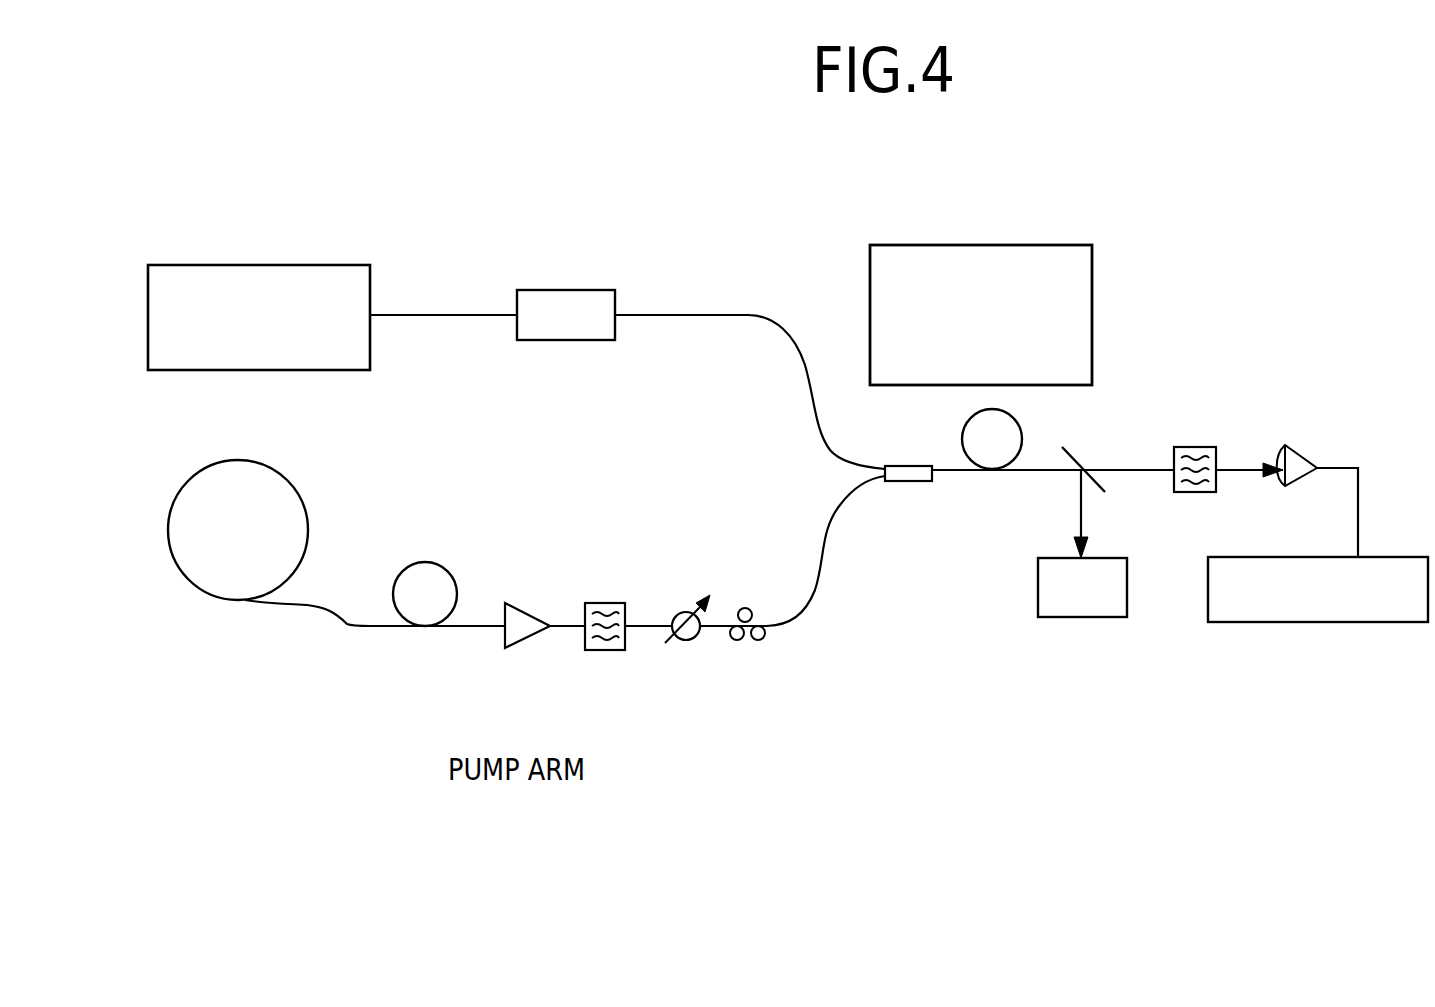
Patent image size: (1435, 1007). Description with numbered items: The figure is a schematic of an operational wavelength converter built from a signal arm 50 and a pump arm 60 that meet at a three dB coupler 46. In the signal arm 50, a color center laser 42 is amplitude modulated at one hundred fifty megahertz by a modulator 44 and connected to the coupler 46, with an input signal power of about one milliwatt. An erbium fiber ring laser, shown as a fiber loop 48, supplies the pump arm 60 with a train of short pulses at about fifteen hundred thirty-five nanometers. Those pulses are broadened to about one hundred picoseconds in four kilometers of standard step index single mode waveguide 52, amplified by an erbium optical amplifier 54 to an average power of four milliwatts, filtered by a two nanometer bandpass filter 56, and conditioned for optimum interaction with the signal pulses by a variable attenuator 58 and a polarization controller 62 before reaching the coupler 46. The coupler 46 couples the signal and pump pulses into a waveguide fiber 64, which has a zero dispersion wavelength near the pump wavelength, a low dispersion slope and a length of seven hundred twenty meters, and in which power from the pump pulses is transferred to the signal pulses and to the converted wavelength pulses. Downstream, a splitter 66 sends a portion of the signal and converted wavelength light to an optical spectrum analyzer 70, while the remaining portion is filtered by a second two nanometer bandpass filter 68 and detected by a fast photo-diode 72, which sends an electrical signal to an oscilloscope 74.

The color center laser 42 is at (268, 265).
The modulator 44 is at (586, 290).
The 3 dB coupler 46 is at (920, 466).
The fiber loop 48 is at (294, 483).
The signal arm 50 is at (475, 401).
The standard step index single mode waveguide 52 is at (457, 593).
The erbium optical amplifier 54 is at (533, 603).
The bandpass filter 56 is at (615, 603).
The variable attenuator 58 is at (685, 611).
The pump arm 60 is at (565, 691).
The polarization controller 62 is at (760, 608).
The waveguide fiber 64 is at (1020, 424).
The splitter 66 is at (1082, 448).
The optical spectrum analyzer 70 is at (1075, 606).
The bandpass filter 68 is at (1203, 447).
The fast photo-diode 72 is at (1310, 455).
The oscilloscope 74 is at (1290, 607).